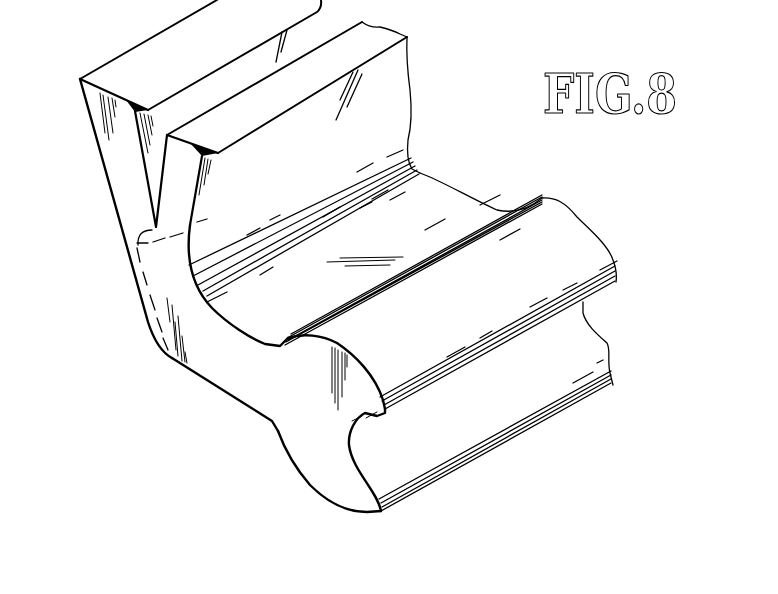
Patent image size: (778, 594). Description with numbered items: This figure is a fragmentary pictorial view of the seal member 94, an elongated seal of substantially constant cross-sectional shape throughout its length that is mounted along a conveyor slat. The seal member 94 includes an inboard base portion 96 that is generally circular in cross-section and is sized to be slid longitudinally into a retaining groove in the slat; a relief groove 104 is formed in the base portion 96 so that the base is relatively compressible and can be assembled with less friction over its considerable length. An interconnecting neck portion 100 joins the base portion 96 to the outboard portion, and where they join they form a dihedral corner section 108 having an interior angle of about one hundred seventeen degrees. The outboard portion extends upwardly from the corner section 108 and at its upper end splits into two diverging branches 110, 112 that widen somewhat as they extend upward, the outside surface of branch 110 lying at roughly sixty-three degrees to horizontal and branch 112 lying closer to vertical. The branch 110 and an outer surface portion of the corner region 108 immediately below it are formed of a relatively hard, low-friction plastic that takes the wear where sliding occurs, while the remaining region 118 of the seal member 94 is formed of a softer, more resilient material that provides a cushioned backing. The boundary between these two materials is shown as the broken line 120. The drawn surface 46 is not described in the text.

The guide member body 46 is at (113, 150).
The seal member 94 is at (183, 404).
The inboard base portion 96 is at (121, 230).
The neck portion 100 is at (248, 387).
The relief groove 104 is at (394, 447).
The dihedral corner section 108 is at (170, 357).
The branch 110 is at (94, 97).
The branch 112 is at (186, 189).
The remaining region of the seal member 118 is at (223, 326).
The boundary line 120 is at (210, 214).